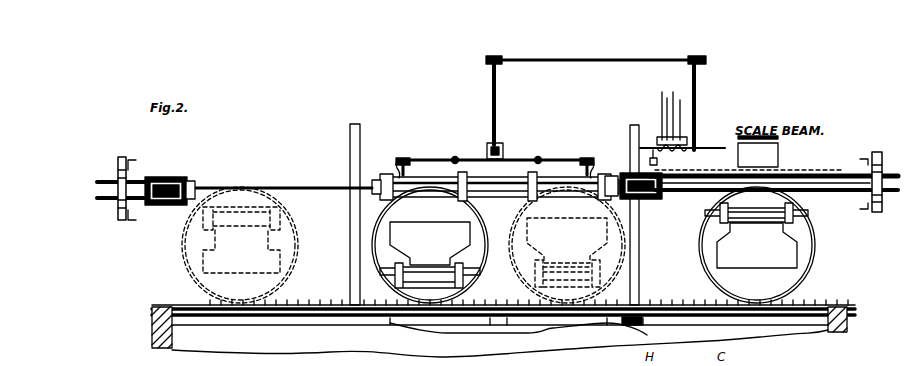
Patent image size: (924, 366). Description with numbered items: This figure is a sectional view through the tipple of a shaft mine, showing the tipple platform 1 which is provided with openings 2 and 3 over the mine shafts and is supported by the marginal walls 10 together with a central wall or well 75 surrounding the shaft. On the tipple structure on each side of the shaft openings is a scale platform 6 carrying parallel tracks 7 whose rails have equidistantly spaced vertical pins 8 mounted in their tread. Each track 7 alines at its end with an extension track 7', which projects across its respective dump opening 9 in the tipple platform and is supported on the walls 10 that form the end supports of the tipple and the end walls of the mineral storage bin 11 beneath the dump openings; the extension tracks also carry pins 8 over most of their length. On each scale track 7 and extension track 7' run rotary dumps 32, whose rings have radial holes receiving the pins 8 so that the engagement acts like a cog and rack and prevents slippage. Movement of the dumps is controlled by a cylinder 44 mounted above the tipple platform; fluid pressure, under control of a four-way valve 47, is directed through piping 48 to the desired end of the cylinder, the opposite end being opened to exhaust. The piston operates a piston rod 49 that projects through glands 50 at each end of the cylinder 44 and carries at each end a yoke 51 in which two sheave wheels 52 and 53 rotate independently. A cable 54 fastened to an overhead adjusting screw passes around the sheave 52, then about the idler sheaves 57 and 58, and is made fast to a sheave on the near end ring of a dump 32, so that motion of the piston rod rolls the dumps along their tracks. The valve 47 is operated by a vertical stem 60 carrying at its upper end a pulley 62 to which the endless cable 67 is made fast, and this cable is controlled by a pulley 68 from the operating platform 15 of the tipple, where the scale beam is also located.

The tipple platform 1 is at (845, 305).
The opening 2 is at (513, 322).
The opening 3 is at (373, 320).
The scale platform 6 is at (472, 328).
The track 7 is at (445, 320).
The extension track 7' is at (529, 293).
The pin 8 is at (461, 303).
The dump opening 9 is at (248, 318).
The wall 10 is at (152, 337).
The mineral storage bin 11 is at (275, 345).
The operating platform 15 is at (812, 170).
The rotary dump 32 is at (296, 262).
The cylinder 44 is at (512, 175).
The four-way valve 47 is at (492, 168).
The piping 48 is at (432, 148).
The piston rod 49 is at (314, 186).
The gland 50 is at (374, 190).
The yoke 51 is at (185, 178).
The sheave wheel 52 is at (170, 178).
The sheave wheel 53 is at (170, 205).
The cable 54 is at (655, 146).
The idler sheave 57 is at (105, 181).
The idler sheave 58 is at (136, 160).
The vertical stem 60 is at (486, 133).
The pulley 62 is at (500, 57).
The cable 67 is at (575, 62).
The pulley 68 is at (697, 57).
The central wall 75 is at (634, 326).